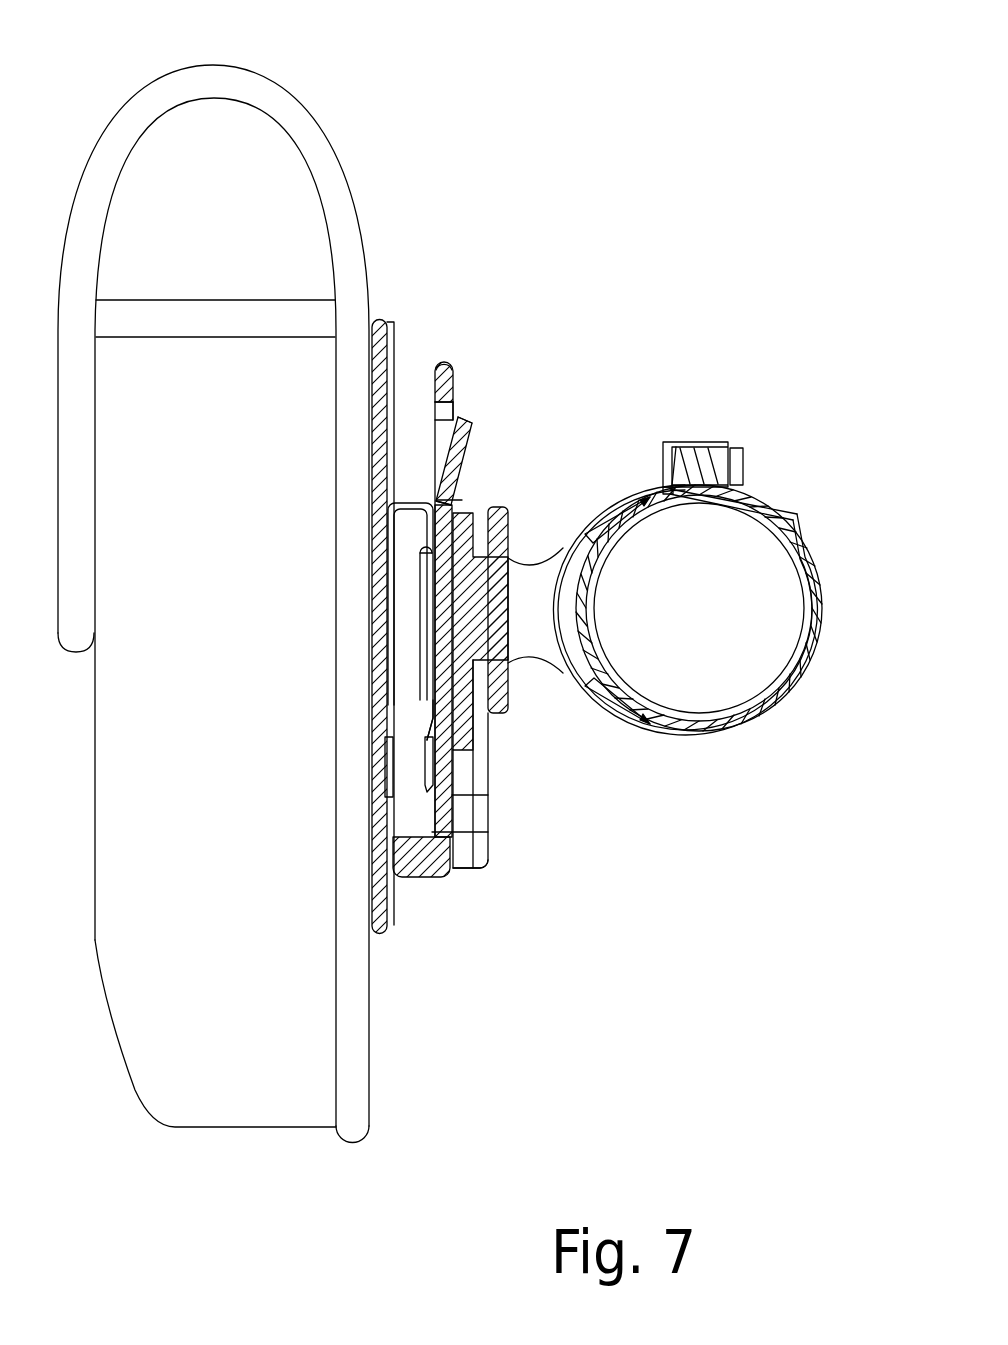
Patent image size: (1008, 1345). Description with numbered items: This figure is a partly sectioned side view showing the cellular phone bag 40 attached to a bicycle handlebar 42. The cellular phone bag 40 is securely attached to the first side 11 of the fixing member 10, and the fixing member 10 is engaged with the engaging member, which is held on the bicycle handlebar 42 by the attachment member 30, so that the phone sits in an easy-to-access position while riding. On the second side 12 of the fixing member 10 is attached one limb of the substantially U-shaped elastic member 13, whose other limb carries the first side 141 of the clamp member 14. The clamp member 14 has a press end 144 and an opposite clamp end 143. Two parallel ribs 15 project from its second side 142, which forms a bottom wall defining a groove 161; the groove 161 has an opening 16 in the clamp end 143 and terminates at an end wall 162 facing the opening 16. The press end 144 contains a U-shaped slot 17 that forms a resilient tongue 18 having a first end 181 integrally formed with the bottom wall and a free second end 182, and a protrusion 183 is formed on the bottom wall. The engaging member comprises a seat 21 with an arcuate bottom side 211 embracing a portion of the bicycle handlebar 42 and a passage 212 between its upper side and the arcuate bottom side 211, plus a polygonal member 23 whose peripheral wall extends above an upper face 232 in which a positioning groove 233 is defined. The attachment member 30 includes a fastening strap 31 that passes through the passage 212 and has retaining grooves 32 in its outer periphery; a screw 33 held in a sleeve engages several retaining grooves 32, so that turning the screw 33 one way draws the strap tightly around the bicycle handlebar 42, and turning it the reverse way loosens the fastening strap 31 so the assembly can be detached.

The cellular phone bag 40 is at (310, 83).
The fixing member 10 is at (400, 359).
The first side 11 is at (379, 318).
The second side 12 is at (397, 320).
The elastic member 13 is at (437, 500).
The clamp member 14 is at (465, 359).
The press end 144 is at (460, 370).
The U-shaped slot 17 is at (454, 410).
The resilient tongue 18 is at (474, 441).
The second end 182 is at (473, 425).
The first end 181 is at (455, 610).
The protrusion 183 is at (462, 500).
The end wall 162 is at (452, 498).
The polygonal member 23 is at (457, 718).
The upper face 232 is at (450, 563).
The positioning groove 233 is at (453, 696).
The seat 21 is at (533, 660).
The arcuate bottom side 211 is at (621, 520).
The passage 212 is at (530, 558).
The ribs 15 is at (482, 733).
The groove 161 is at (462, 758).
The second side 142 is at (452, 795).
The first side 141 is at (432, 831).
The clamp end 143 is at (426, 877).
The opening 16 is at (460, 878).
The attachment member 30 is at (667, 428).
The fastening strap 31 is at (656, 740).
The retaining grooves 32 is at (712, 735).
The screw 33 is at (740, 462).
The bicycle handlebar 42 is at (810, 565).